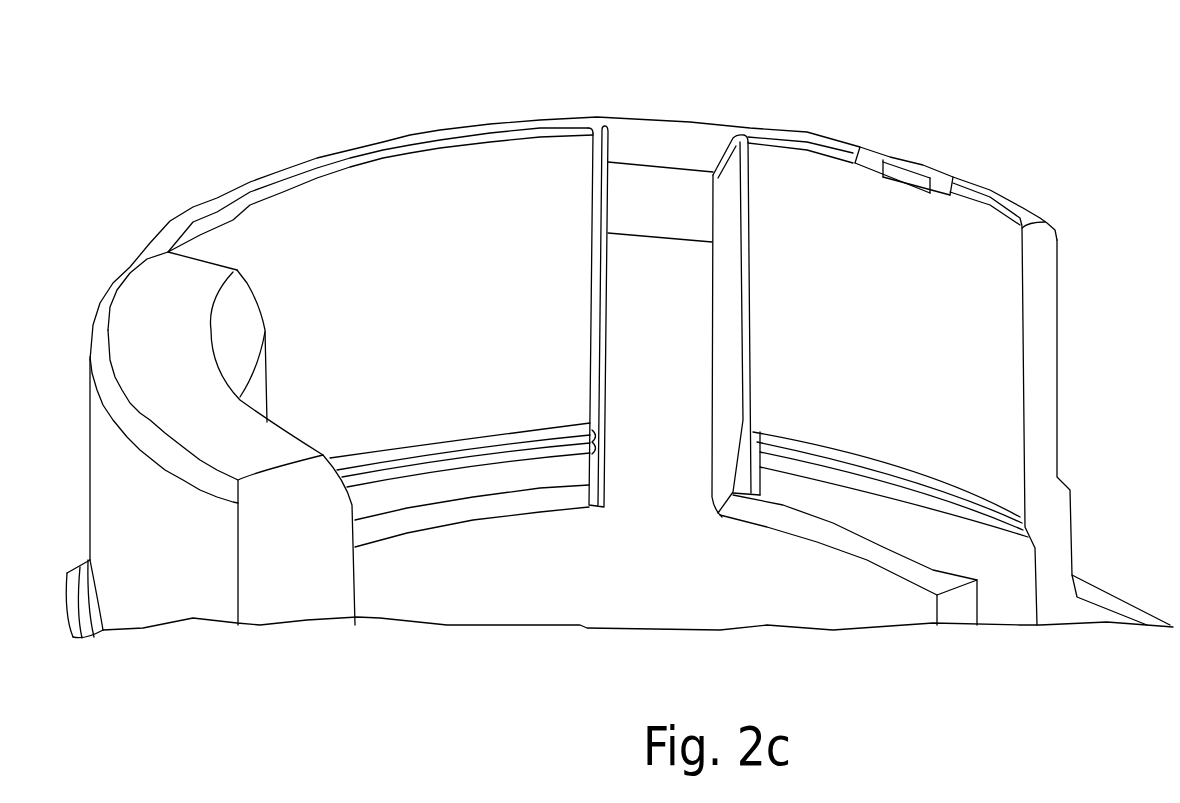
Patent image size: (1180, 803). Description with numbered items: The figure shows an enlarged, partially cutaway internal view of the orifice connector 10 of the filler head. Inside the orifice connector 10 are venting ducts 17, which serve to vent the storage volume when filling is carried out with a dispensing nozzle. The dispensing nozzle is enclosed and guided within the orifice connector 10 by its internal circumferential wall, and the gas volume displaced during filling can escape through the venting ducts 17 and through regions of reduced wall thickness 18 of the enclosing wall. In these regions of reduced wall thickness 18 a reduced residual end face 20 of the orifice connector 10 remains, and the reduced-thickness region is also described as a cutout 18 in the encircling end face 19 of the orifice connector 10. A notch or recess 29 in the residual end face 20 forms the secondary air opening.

The orifice connector 10 is at (329, 637).
The venting ducts 17 is at (943, 533).
The regions of reduced wall thickness 18 is at (327, 208).
The encircling end face 19 is at (238, 444).
The residual end face 20 is at (465, 128).
The notch or recess 29 is at (921, 172).